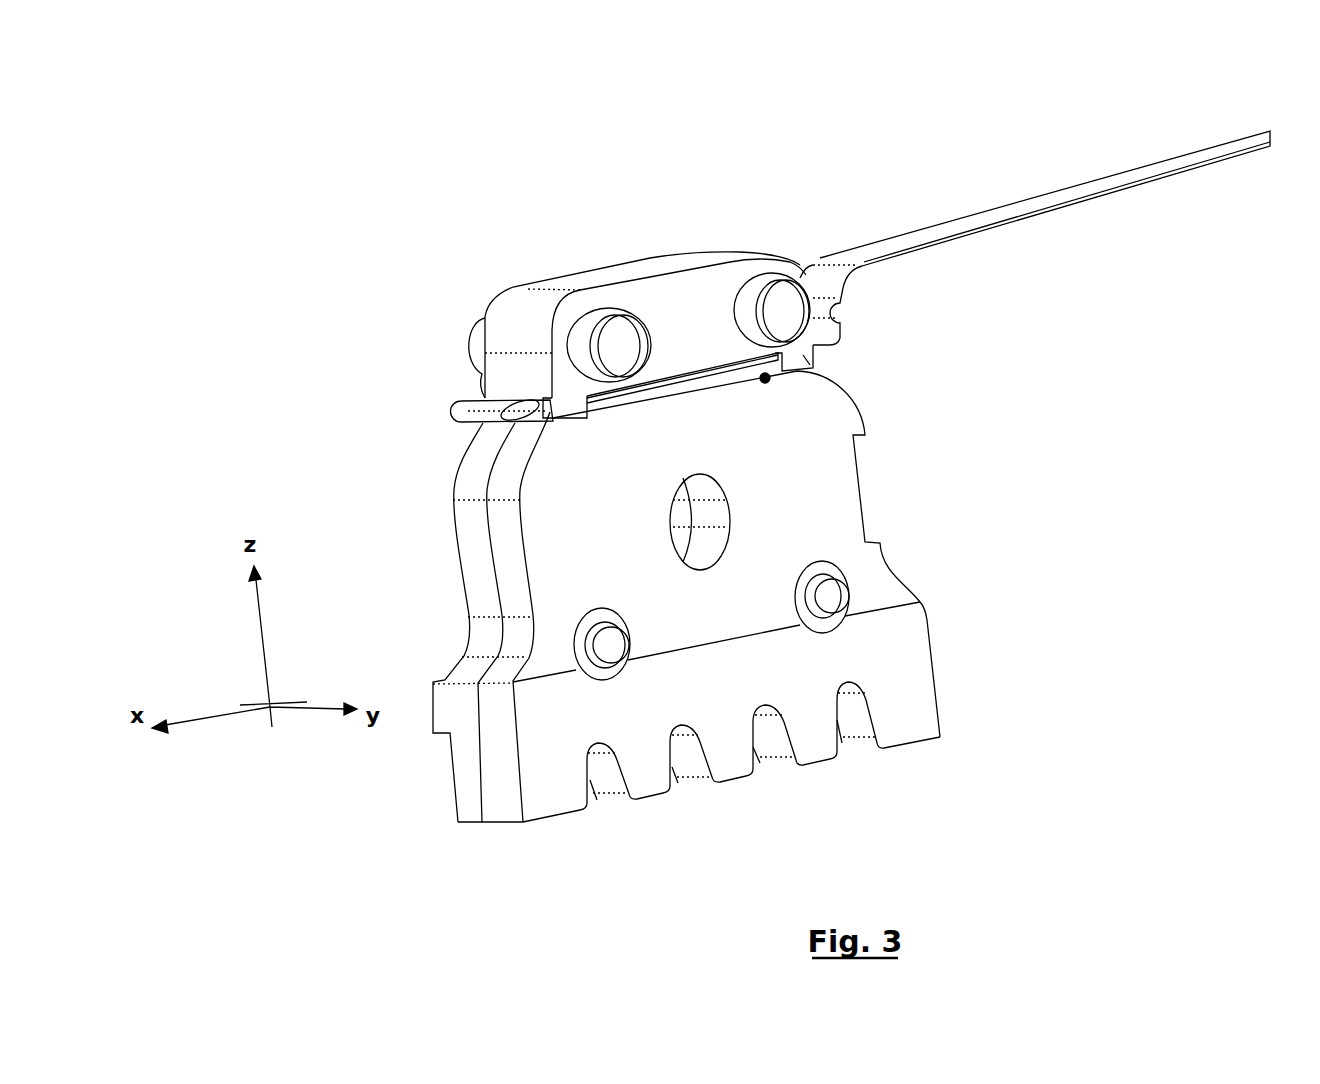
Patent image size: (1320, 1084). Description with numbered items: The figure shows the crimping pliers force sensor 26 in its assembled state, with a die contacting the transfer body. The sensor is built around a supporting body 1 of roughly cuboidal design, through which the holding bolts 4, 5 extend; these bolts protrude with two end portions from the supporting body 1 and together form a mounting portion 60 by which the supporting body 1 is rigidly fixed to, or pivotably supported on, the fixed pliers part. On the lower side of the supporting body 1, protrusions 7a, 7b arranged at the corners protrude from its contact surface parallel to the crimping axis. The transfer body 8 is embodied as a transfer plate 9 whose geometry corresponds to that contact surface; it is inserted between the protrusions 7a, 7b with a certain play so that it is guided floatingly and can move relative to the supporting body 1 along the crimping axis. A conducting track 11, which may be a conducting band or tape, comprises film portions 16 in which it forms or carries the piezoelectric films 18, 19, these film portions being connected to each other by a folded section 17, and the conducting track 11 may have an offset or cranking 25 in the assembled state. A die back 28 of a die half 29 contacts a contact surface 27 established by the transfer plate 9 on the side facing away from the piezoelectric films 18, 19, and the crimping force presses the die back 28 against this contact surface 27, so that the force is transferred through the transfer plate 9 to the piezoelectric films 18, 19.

The supporting body 1 is at (637, 269).
The holding bolt 4 is at (600, 306).
The holding bolt 5 is at (764, 268).
The protrusion 7a is at (832, 368).
The protrusion 7b is at (570, 408).
The transfer body 8 is at (682, 411).
The transfer plate 9 is at (682, 411).
The conducting track 11 is at (1212, 166).
The film portion 16 is at (682, 411).
The folded section 17 is at (477, 409).
The piezoelectric film 18 is at (682, 411).
The piezoelectric film 19 is at (727, 391).
The cranking 25 is at (826, 262).
The crimping pliers force sensor 26 is at (799, 254).
The contact surface 27 is at (767, 386).
The die back 28 is at (775, 357).
The die half 29 is at (840, 539).
The mounting portion 60 is at (454, 337).